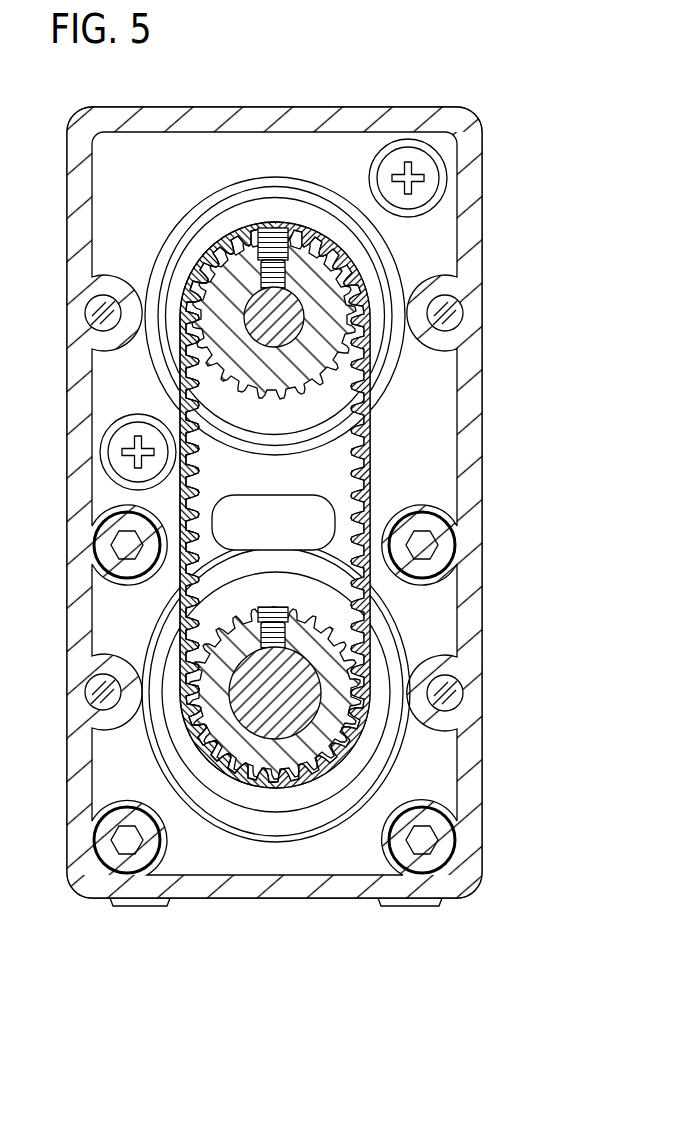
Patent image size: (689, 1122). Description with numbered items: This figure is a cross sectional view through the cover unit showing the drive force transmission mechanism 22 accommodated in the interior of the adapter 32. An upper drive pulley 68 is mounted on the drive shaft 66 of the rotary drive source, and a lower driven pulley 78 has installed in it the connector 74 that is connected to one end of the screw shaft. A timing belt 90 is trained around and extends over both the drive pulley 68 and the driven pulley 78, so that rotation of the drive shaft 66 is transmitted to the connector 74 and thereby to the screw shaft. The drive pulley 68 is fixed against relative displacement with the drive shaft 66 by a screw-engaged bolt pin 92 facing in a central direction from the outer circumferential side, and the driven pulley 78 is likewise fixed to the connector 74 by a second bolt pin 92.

The drive force transmission mechanism 22 is at (504, 128).
The adapter 32 is at (115, 634).
The drive shaft 66 is at (262, 308).
The drive pulley 68 is at (327, 302).
The timing belt 90 is at (365, 465).
The bolt pin 92 is at (240, 278).
The connector 74 is at (298, 697).
The driven pulley 78 is at (296, 753).